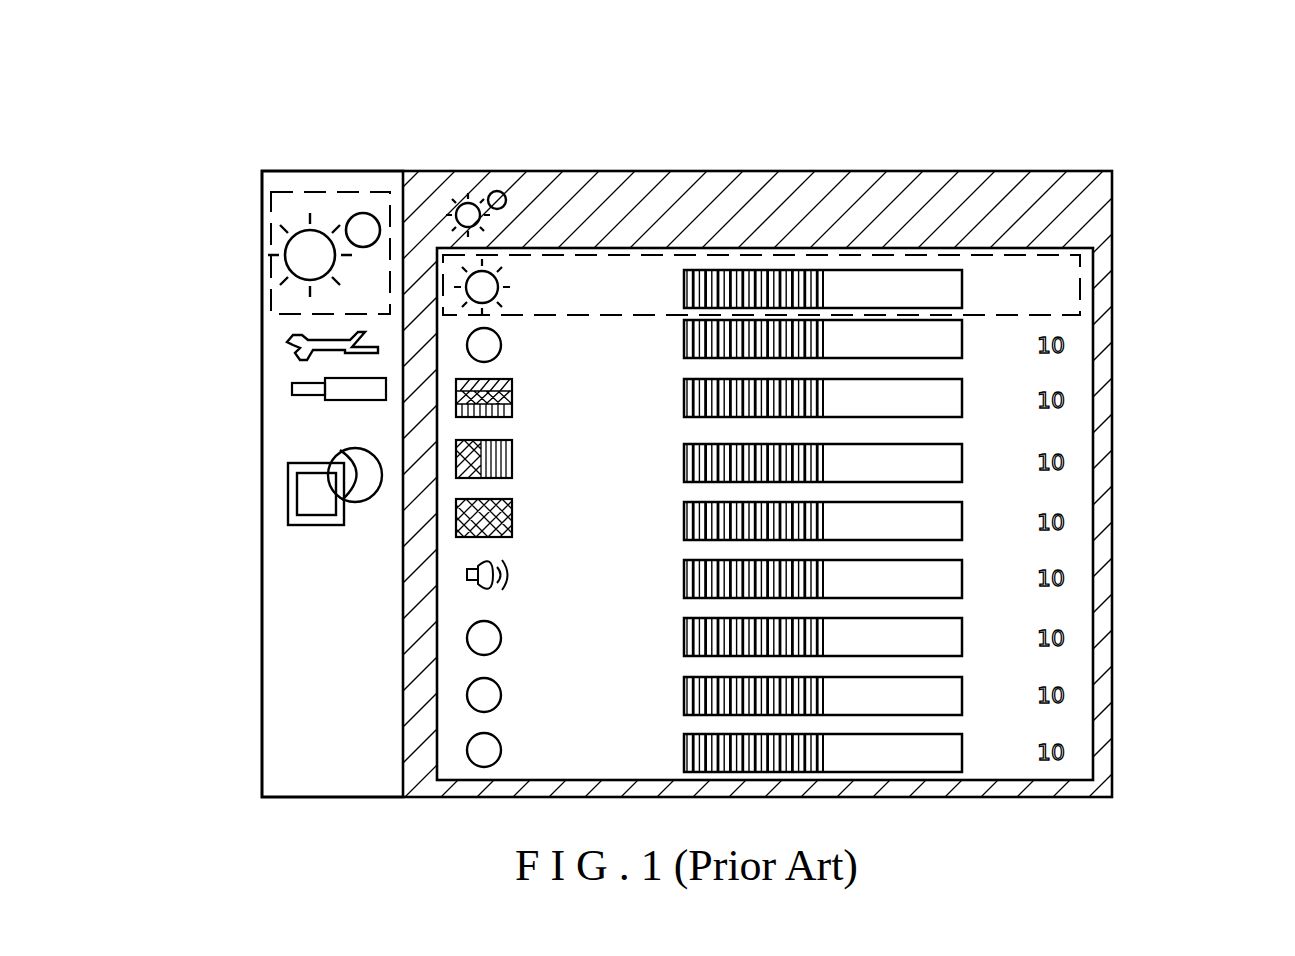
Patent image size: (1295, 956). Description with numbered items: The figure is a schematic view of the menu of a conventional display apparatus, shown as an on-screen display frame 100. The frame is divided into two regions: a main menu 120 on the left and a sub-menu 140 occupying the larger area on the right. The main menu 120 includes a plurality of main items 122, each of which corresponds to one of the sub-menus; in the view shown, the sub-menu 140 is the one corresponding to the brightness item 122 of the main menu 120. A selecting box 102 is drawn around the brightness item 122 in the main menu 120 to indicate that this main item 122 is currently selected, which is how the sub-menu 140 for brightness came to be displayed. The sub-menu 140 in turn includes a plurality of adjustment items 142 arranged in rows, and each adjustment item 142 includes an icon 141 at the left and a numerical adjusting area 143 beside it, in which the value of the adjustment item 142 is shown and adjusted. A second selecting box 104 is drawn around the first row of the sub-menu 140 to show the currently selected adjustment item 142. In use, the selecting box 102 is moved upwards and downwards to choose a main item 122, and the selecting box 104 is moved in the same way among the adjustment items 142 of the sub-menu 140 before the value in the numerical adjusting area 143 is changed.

The on-screen display frame 100 is at (1150, 122).
The selecting box 102 is at (271, 303).
The selecting box 104 is at (1080, 268).
The main menu 120 is at (293, 702).
The main item 122 is at (305, 247).
The sub-menu 140 is at (1063, 493).
The icon 141 is at (483, 287).
The adjustment item 142 is at (827, 186).
The numerical adjusting area 143 is at (798, 287).